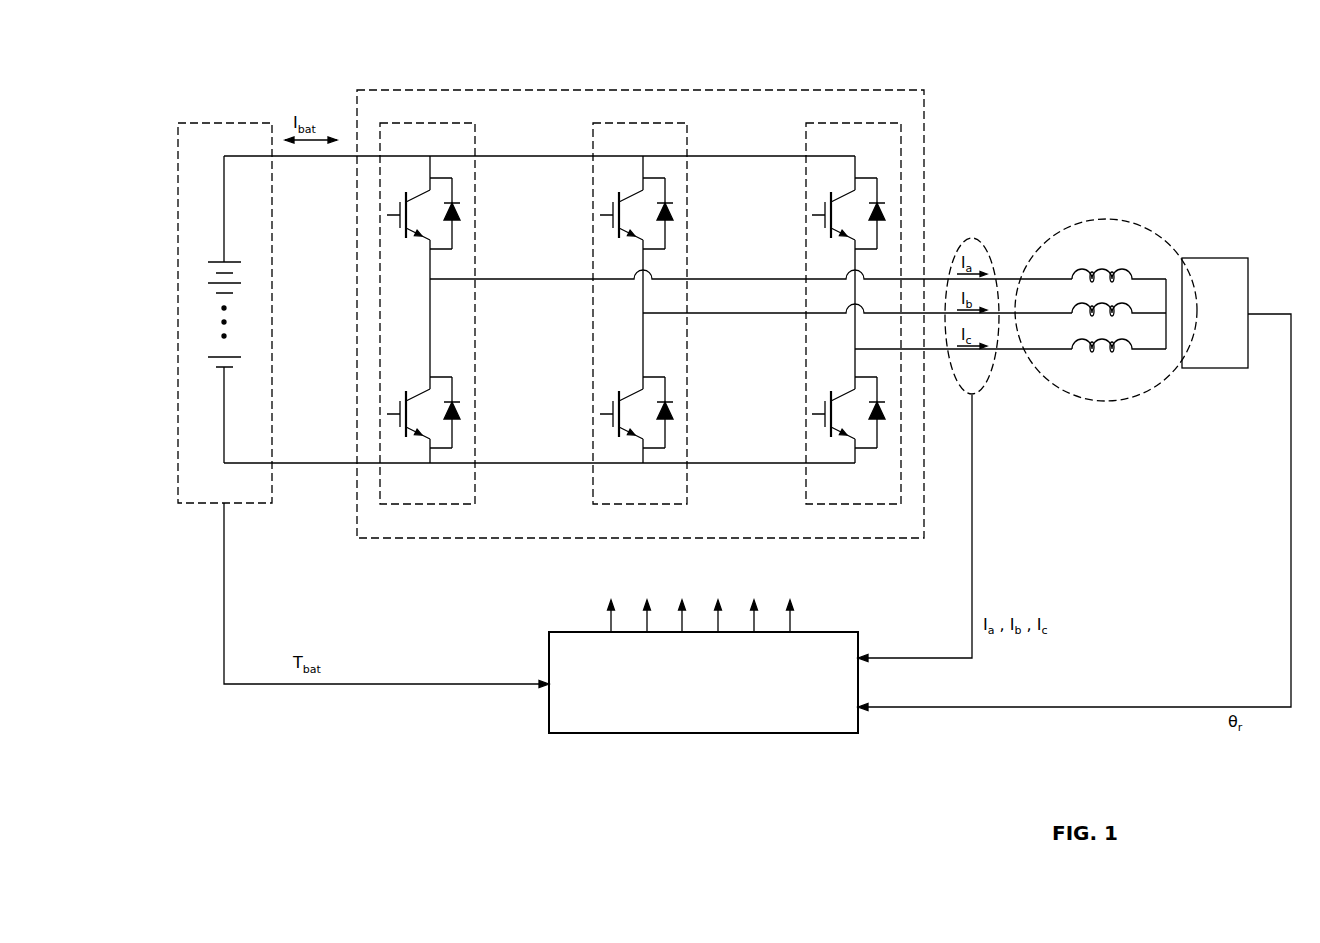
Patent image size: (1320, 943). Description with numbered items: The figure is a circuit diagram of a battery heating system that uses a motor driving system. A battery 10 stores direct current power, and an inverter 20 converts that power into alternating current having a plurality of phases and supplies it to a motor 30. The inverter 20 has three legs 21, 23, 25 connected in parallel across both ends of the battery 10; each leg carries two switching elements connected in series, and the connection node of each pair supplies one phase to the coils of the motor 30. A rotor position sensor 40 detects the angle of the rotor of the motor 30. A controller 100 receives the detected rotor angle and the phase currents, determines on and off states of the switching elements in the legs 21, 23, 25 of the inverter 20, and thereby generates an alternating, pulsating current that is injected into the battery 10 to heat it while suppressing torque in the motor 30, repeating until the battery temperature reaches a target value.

The battery 10 is at (223, 123).
The inverter 20 is at (748, 90).
The first leg 21 is at (428, 123).
The second leg 23 is at (640, 123).
The third leg 25 is at (853, 123).
The motor 30 is at (1097, 219).
The rotor position sensor 40 is at (1214, 258).
The controller 100 is at (703, 733).